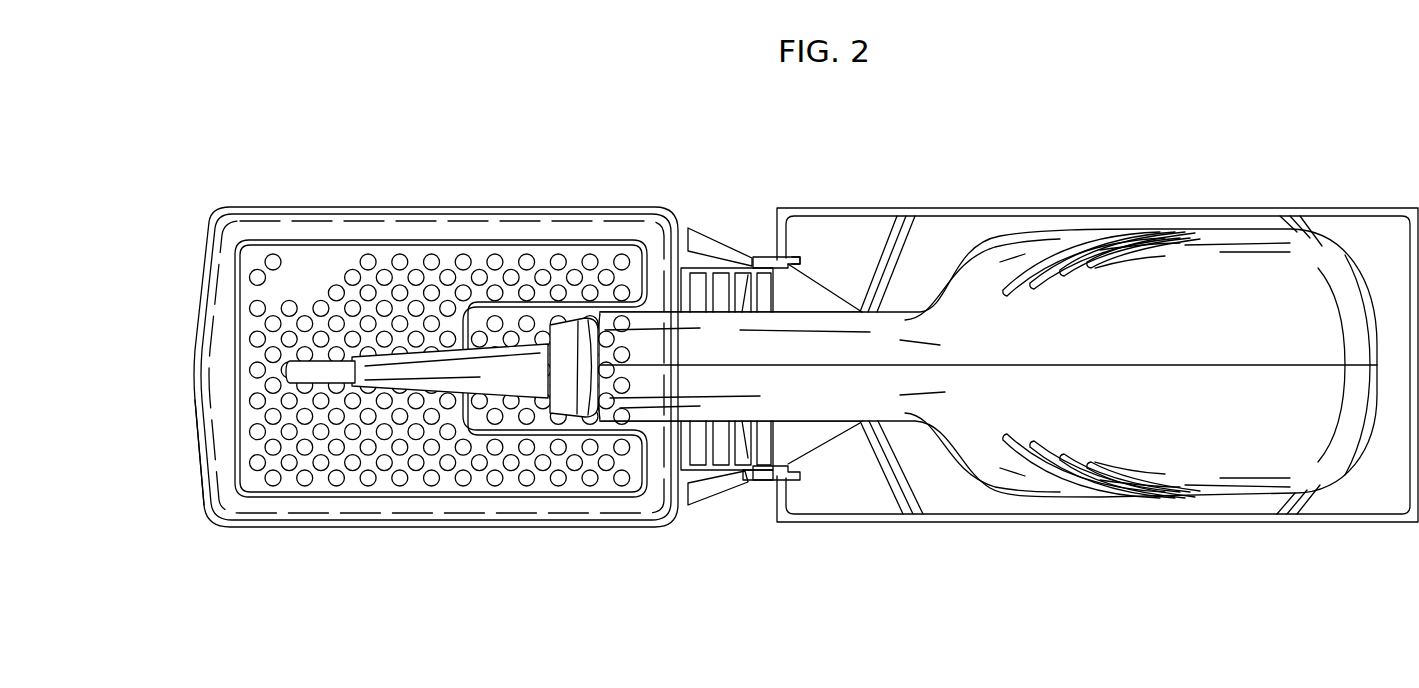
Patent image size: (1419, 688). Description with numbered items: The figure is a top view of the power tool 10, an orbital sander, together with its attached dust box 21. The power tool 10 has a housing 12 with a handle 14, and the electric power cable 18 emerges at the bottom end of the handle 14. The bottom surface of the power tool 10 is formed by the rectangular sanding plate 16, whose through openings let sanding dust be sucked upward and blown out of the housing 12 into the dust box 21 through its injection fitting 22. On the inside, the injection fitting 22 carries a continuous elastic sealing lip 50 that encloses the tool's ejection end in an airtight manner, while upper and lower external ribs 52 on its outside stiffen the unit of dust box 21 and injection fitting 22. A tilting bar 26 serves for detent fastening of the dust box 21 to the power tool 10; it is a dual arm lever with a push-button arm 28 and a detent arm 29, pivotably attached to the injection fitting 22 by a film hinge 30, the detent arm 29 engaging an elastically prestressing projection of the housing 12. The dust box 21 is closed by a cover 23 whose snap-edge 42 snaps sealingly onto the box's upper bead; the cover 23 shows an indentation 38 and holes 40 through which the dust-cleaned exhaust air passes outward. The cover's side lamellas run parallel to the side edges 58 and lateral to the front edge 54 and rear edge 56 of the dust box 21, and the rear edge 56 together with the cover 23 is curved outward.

The power tool 10 is at (1215, 173).
The housing 12 is at (1240, 434).
The handle 14 is at (862, 402).
The sanding plate 16 is at (1153, 522).
The electric power cable 18 is at (388, 375).
The dust box 21 is at (385, 203).
The injection fitting 22 is at (738, 258).
The cover 23 is at (289, 258).
The tilting bar 26 is at (735, 492).
The push-button arm 28 is at (697, 228).
The detent arm 29 is at (803, 258).
The film hinge 30 is at (752, 480).
The indentation 38 is at (508, 420).
The holes 40 is at (339, 484).
The snap-edge 42 is at (200, 482).
The elastic sealing lip 50 is at (513, 210).
The external ribs 52 is at (714, 455).
The front edge 54 is at (719, 270).
The rear edge 56 is at (200, 268).
The side edges 58 is at (480, 533).